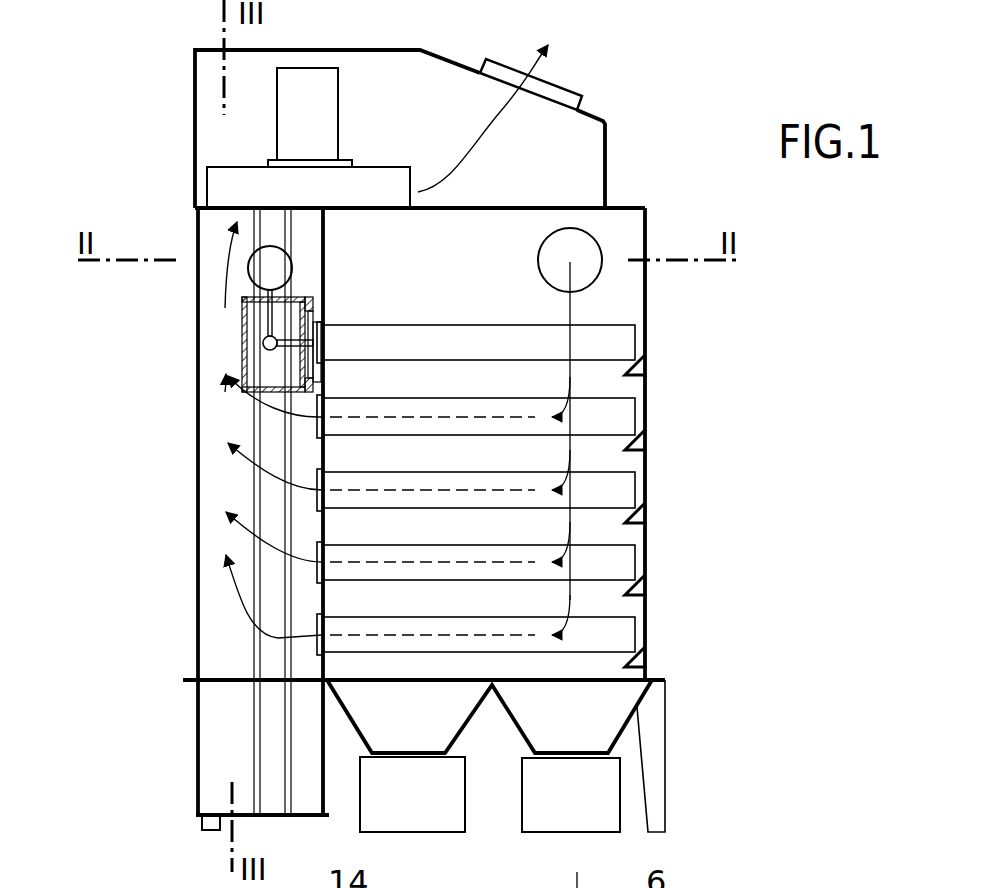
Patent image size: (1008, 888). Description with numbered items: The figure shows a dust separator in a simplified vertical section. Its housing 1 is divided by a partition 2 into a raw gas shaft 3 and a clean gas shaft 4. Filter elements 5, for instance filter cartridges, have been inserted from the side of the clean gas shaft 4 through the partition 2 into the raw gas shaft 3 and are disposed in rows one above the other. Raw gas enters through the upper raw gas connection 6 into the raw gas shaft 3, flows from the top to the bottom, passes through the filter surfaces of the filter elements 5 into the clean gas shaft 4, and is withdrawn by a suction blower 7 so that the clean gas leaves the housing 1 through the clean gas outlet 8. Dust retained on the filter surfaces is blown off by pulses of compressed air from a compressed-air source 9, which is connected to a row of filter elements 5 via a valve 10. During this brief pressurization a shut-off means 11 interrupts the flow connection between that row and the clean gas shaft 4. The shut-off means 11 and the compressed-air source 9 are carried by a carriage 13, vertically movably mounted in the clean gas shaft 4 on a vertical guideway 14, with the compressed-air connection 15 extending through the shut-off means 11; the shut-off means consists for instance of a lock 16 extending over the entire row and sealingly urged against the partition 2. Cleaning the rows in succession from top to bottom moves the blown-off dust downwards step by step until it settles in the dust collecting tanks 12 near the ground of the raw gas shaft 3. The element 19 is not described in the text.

The housing 1 is at (650, 439).
The partition 2 is at (321, 600).
The raw gas shaft 3 is at (617, 297).
The clean gas shaft 4 is at (222, 487).
The filter elements 5 is at (608, 325).
The raw gas connection 6 is at (580, 252).
The suction blower 7 is at (235, 182).
The clean gas outlet 8 is at (543, 90).
The compressed-air source 9 is at (272, 267).
The valve 10 is at (266, 345).
The shut-off means 11 is at (298, 368).
The dust collecting tanks 12 is at (400, 805).
The carriage 13 is at (240, 322).
The vertical guideway 14 is at (290, 738).
The compressed-air connection 15 is at (308, 340).
The lock 16 is at (320, 360).
The lower housing portion 19 is at (218, 707).